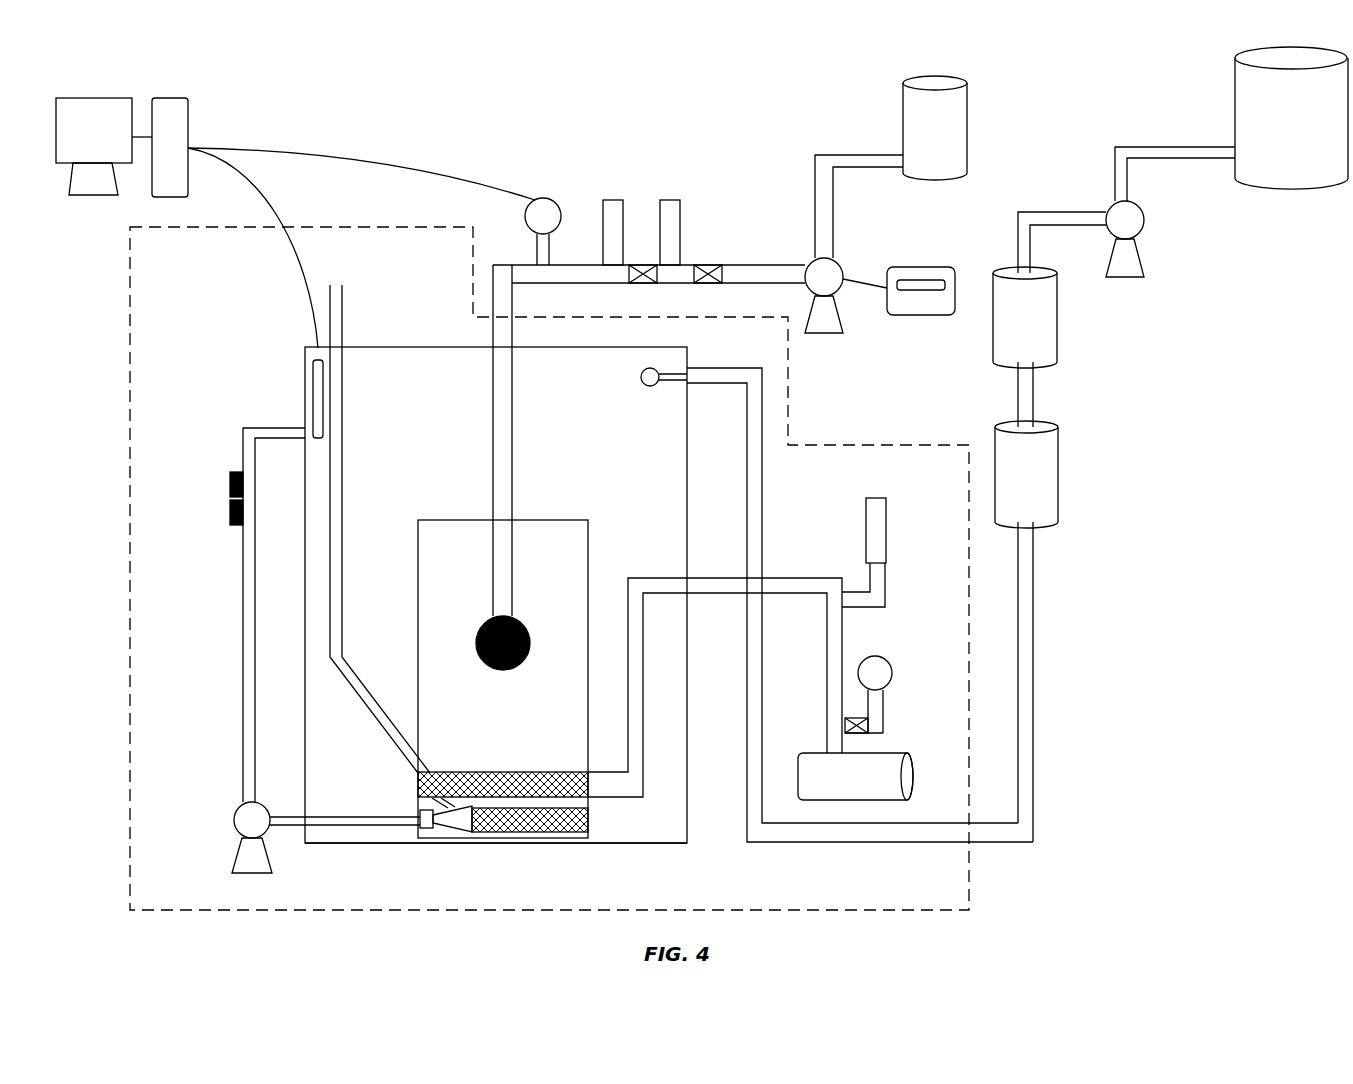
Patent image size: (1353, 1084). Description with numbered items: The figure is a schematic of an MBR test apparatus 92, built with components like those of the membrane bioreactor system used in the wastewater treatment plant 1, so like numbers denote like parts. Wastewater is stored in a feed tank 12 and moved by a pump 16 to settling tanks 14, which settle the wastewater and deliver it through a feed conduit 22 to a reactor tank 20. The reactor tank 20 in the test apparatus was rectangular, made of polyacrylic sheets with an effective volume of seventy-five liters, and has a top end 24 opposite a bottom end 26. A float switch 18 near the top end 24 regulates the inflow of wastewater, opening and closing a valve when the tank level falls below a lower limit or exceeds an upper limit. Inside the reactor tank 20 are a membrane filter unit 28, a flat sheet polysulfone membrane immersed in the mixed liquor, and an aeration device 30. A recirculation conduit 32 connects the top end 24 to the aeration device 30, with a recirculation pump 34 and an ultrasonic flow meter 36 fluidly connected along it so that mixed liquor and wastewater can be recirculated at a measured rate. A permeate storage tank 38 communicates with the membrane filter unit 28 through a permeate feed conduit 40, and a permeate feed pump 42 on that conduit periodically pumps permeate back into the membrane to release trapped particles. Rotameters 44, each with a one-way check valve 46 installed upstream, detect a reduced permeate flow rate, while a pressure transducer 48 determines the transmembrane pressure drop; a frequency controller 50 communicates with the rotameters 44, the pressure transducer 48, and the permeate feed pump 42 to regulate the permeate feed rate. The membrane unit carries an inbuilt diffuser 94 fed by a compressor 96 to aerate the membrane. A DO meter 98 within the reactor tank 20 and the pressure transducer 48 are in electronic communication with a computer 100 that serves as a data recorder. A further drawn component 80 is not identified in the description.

The wastewater treatment plant 1 is at (456, 104).
The computer 100 is at (172, 118).
The MBR test apparatus 92 is at (388, 225).
The top end 24 is at (418, 346).
The reactor tank 20 is at (496, 595).
The bottom end 26 is at (632, 845).
The feed tube 80 is at (330, 315).
The DO meter 98 is at (318, 407).
The recirculation conduit 32 is at (267, 428).
The ultrasonic flow meter 36 is at (228, 497).
The recirculation pump 34 is at (240, 815).
The membrane filter unit 28 is at (503, 679).
The pressure transducer 48 is at (538, 200).
The aeration device 30 is at (478, 758).
The inbuilt diffuser 94 is at (540, 772).
The float switch 18 is at (650, 388).
The one-way check valves 46 is at (698, 266).
The rotameters 44 is at (669, 200).
The permeate feed pump 42 is at (838, 298).
The permeate feed conduit 40 is at (815, 178).
The permeate storage tank 38 is at (935, 128).
The frequency controller 50 is at (920, 316).
The feed tank 12 is at (1231, 124).
The pump 16 is at (1146, 220).
The settling tanks 14 is at (1025, 397).
The feed conduit 22 is at (1040, 724).
The compressor 96 is at (885, 778).